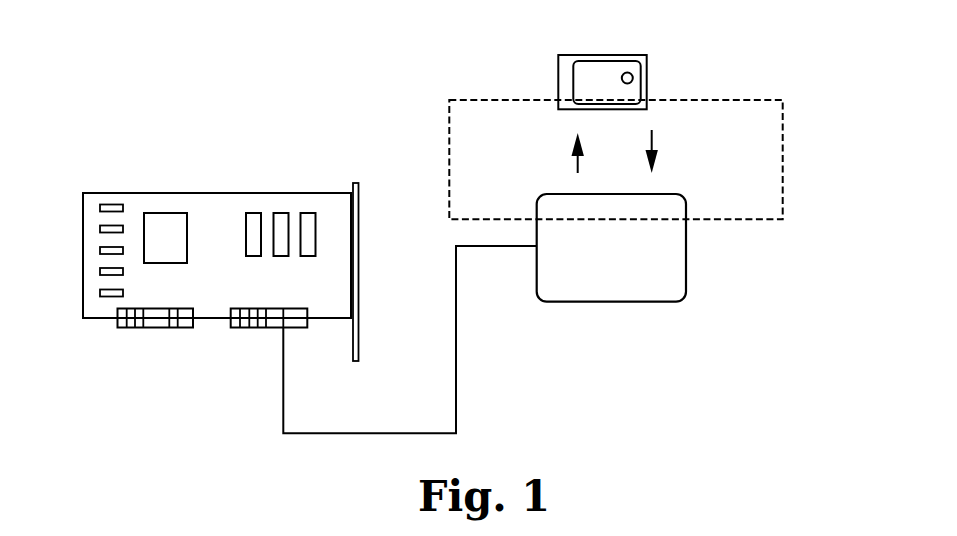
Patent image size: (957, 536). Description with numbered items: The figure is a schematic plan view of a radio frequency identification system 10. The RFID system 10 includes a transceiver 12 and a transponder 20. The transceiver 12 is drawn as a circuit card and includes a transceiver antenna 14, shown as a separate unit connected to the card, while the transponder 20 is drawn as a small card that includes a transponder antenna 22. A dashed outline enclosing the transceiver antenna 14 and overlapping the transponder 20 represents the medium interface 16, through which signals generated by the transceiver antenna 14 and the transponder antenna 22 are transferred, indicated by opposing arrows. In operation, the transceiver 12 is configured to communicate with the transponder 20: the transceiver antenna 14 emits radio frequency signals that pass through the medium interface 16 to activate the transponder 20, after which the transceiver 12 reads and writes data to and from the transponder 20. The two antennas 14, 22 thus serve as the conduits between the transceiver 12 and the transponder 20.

The RFID system 10 is at (218, 95).
The transceiver 12 is at (80, 247).
The transceiver antenna 14 is at (686, 274).
The medium interface 16 is at (783, 128).
The transponder 20 is at (622, 50).
The transponder antenna 22 is at (571, 66).